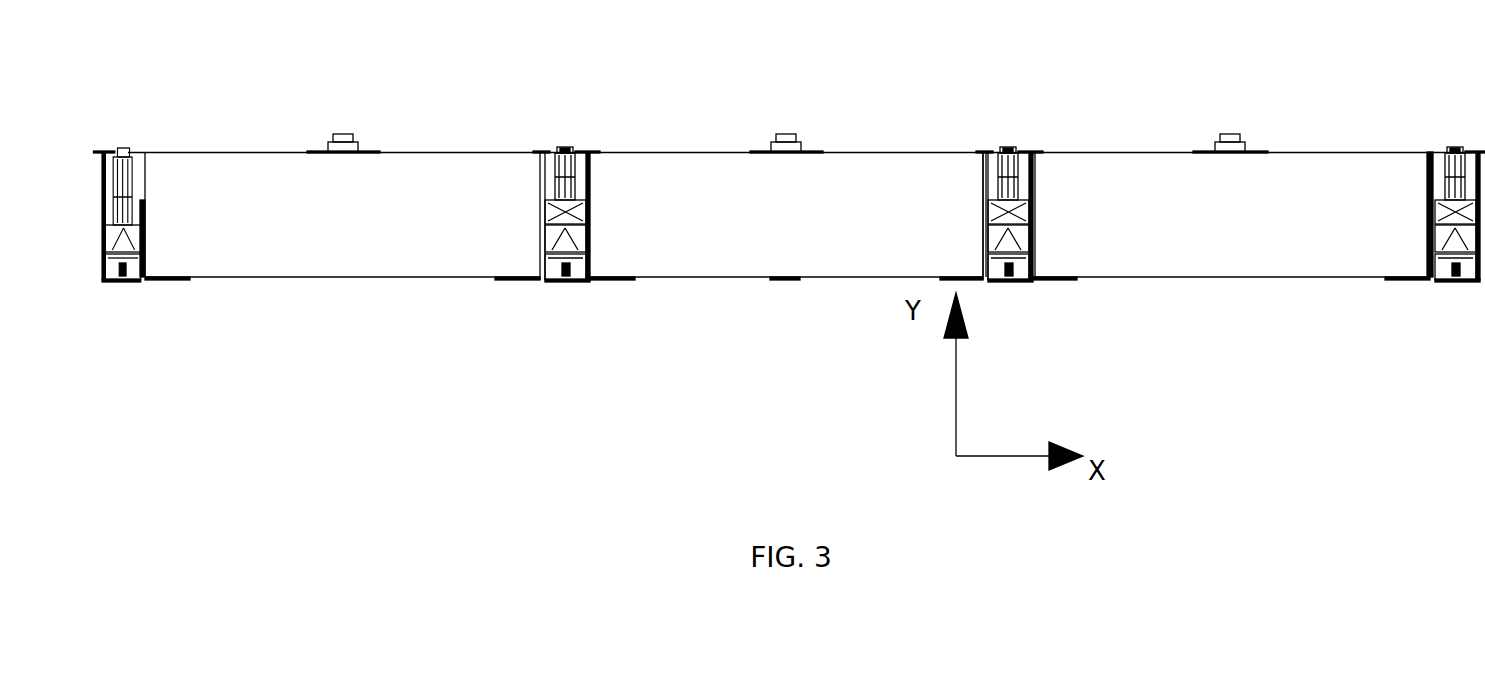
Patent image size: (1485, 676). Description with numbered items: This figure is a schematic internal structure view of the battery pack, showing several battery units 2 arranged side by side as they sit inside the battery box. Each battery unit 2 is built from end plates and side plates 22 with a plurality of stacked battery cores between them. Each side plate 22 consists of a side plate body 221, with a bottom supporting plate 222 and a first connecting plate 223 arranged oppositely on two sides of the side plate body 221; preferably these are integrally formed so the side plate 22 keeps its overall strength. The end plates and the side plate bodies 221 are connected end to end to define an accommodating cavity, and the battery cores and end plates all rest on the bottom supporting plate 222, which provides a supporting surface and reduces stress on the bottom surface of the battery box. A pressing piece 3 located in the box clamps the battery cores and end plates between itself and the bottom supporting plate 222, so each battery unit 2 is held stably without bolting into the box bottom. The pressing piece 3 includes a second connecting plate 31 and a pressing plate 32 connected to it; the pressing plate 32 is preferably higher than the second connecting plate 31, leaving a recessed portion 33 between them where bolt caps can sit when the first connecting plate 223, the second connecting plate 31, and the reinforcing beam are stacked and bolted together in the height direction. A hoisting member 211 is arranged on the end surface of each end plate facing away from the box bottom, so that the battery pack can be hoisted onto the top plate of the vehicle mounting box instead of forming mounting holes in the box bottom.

The battery unit 2 is at (220, 203).
The hoisting member 211 is at (350, 146).
The side plate 22 is at (527, 228).
The side plate body 221 is at (540, 230).
The bottom supporting plate 222 is at (540, 195).
The first connecting plate 223 is at (556, 262).
The pressing piece 3 is at (572, 119).
The second connecting plate 31 is at (583, 150).
The pressing plate 32 is at (562, 150).
The recessed portion 33 is at (571, 150).